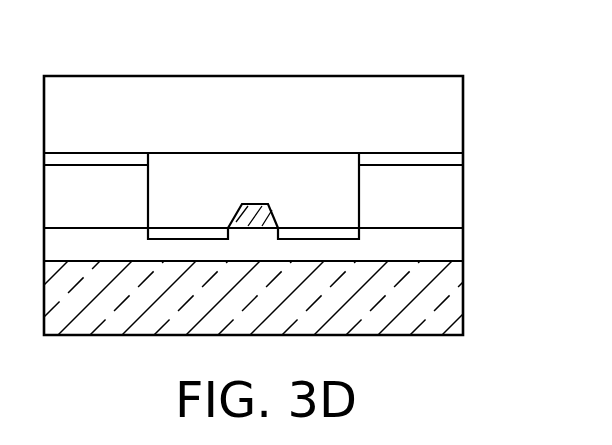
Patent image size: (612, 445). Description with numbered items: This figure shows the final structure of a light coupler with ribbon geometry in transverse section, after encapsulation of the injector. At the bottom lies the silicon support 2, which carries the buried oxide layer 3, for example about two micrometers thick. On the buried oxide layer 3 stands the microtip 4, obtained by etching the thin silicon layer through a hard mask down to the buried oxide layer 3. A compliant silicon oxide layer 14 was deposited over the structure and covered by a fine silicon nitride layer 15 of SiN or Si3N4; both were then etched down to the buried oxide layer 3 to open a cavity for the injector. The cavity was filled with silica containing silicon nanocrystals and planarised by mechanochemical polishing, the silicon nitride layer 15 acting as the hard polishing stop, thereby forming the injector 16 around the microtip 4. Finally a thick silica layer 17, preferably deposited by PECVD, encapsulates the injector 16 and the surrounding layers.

The silicon support 2 is at (450, 305).
The buried oxide layer 3 is at (448, 243).
The microtip 4 is at (242, 222).
The silicon oxide layer 14 is at (448, 200).
The silicon nitride layer 15 is at (435, 157).
The injector 16 is at (273, 167).
The thick silica layer 17 is at (403, 82).